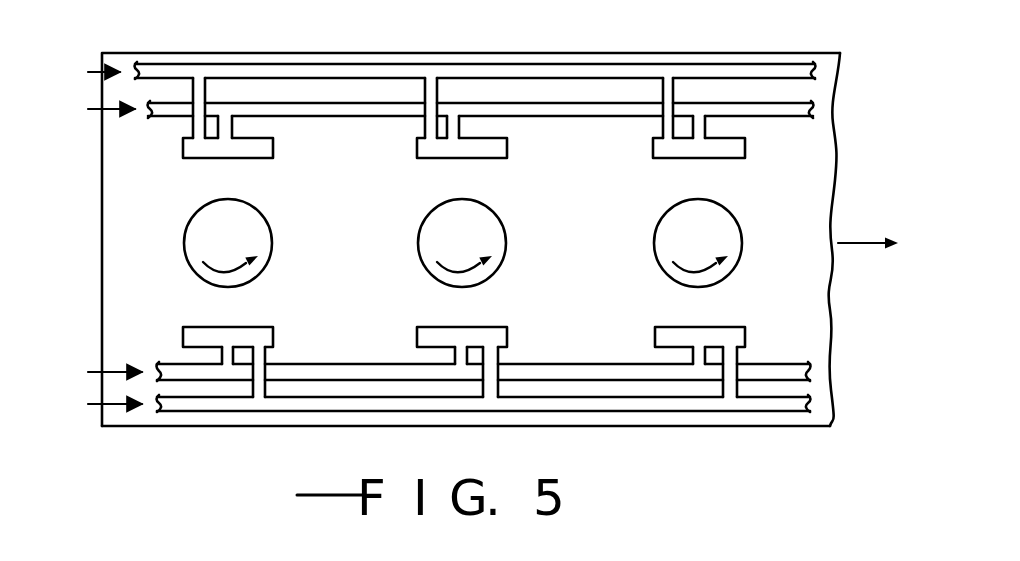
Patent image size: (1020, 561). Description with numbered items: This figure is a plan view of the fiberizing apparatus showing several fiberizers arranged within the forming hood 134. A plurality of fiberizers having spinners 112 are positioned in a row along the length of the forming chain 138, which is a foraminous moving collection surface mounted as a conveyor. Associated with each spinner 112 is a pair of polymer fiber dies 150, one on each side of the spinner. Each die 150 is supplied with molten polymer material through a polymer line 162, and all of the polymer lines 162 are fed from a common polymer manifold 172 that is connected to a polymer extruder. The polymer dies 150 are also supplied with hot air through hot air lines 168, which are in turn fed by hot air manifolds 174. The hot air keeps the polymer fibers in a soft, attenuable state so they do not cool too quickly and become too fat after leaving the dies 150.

The spinner 112 is at (416, 236).
The forming hood 134 is at (86, 240).
The forming chain 138 is at (837, 188).
The polymer fiber die 150 is at (250, 160).
The polymer line 162 is at (233, 123).
The hot air line 168 is at (208, 90).
The polymer manifold 172 is at (165, 115).
The hot air manifold 174 is at (640, 412).